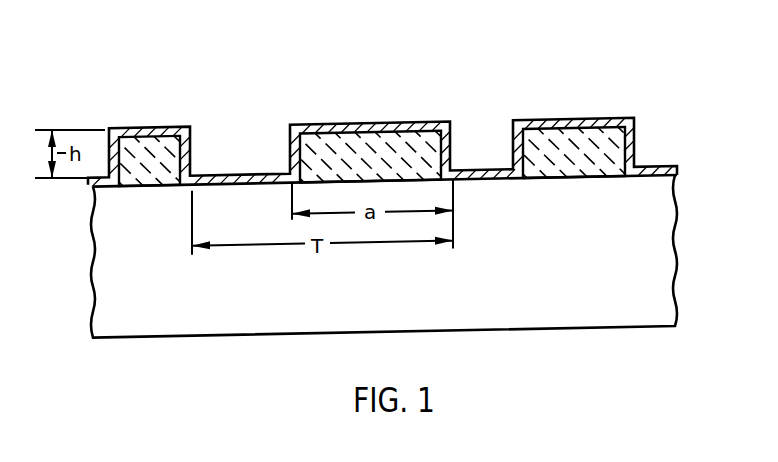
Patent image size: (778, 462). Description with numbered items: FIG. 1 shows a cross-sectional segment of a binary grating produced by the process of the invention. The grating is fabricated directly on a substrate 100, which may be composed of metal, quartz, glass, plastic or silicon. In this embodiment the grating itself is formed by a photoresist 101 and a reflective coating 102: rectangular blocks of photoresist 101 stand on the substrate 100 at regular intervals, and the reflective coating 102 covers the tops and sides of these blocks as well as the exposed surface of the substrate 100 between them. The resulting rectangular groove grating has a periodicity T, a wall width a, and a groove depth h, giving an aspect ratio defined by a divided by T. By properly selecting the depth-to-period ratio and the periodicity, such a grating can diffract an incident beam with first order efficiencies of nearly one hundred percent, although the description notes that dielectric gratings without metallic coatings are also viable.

The substrate 100 is at (384, 256).
The photoresist 101 is at (576, 136).
The reflective coating 102 is at (295, 109).